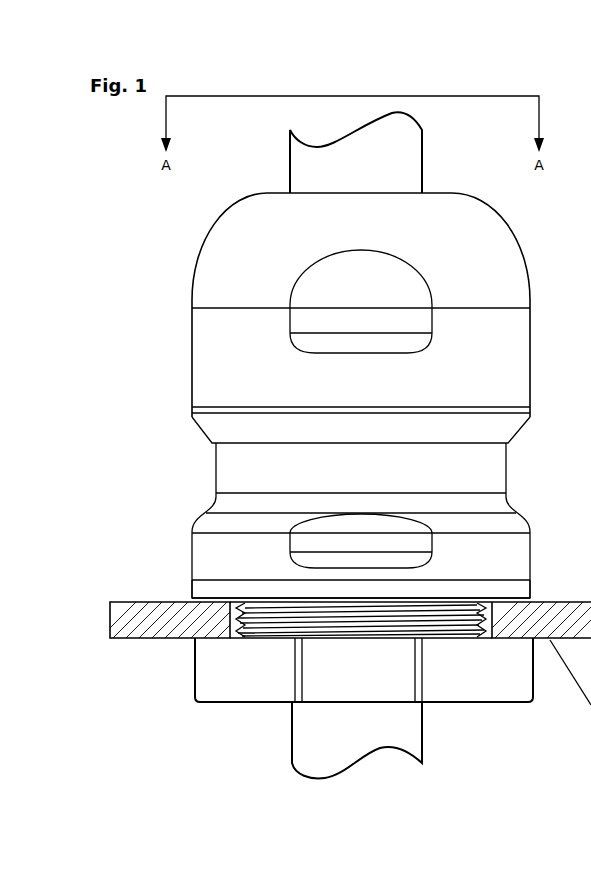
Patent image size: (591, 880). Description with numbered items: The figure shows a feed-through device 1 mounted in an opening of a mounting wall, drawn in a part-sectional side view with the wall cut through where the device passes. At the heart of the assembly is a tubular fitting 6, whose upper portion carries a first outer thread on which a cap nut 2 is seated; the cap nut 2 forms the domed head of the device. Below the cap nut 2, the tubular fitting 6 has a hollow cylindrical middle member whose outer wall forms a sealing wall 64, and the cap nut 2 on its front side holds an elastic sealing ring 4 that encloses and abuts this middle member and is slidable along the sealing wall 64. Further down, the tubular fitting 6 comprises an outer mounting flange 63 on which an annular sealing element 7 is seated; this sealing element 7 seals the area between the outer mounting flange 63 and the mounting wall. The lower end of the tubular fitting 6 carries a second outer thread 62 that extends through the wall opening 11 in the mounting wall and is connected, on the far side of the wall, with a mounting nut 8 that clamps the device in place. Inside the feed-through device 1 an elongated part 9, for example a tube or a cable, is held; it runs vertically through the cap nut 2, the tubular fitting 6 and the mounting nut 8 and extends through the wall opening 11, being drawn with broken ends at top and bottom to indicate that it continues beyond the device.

The feed-through device 1 is at (190, 225).
The cap nut 2 is at (190, 290).
The elastic sealing ring 4 is at (202, 435).
The tubular fitting 6 is at (215, 500).
The annular sealing element 7 is at (190, 588).
The mounting nut 8 is at (205, 667).
The elongated part 9 is at (290, 160).
The wall opening 11 is at (487, 632).
The second outer thread 62 is at (412, 618).
The outer mounting flange 63 is at (213, 553).
The sealing wall 64 is at (227, 467).